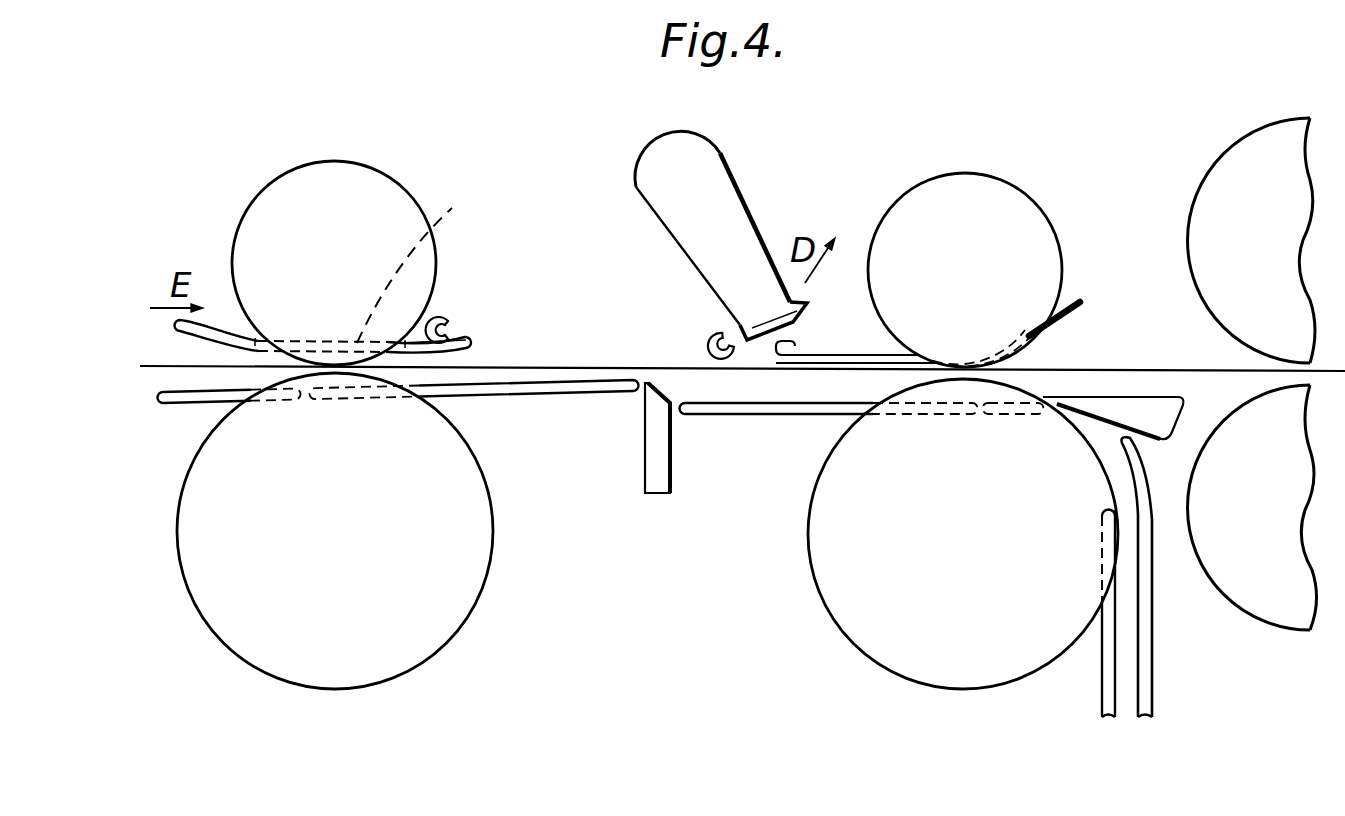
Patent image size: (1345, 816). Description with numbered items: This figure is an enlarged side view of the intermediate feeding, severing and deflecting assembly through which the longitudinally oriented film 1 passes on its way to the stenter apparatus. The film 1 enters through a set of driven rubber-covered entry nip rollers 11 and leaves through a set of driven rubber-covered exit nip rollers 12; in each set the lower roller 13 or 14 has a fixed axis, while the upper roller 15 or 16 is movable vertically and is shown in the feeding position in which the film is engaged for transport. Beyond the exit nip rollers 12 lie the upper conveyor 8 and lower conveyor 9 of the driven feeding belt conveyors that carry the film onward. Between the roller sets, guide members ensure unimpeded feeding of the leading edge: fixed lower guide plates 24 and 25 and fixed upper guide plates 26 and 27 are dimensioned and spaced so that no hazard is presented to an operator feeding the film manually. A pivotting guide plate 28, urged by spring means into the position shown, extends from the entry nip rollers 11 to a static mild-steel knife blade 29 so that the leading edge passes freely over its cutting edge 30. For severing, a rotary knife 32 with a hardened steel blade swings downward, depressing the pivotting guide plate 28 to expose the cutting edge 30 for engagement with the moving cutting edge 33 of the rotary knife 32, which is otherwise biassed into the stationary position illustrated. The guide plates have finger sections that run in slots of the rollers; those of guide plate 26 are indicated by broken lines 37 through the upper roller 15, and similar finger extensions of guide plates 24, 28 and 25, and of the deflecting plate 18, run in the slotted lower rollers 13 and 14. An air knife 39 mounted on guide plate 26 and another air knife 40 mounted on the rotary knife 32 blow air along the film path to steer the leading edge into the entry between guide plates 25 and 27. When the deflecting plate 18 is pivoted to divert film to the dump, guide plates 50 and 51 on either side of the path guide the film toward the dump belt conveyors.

The film 1 is at (173, 366).
The upper conveyor 8 is at (1232, 155).
The lower conveyor 9 is at (1270, 605).
The entry nip rollers 11 is at (480, 632).
The exit nip rollers 12 is at (825, 626).
The lower roller 13 is at (457, 577).
The lower roller 14 is at (827, 558).
The upper roller 15 is at (340, 177).
The upper roller 16 is at (978, 193).
The deflecting plate 18 is at (1157, 407).
The lower guide plate 24 is at (185, 402).
The lower guide plate 25 is at (782, 417).
The upper guide plate 26 is at (423, 337).
The upper guide plate 27 is at (1082, 303).
The pivotting guide plate 28 is at (573, 395).
The knife blade 29 is at (660, 497).
The cutting edge 30 is at (648, 370).
The rotary knife 32 is at (648, 168).
The moving cutting edge 33 is at (807, 302).
The broken lines 37 is at (425, 253).
The air knife 39 is at (457, 315).
The air knife 40 is at (710, 337).
The guide plate 50 is at (1155, 703).
The guide plate 51 is at (1100, 680).